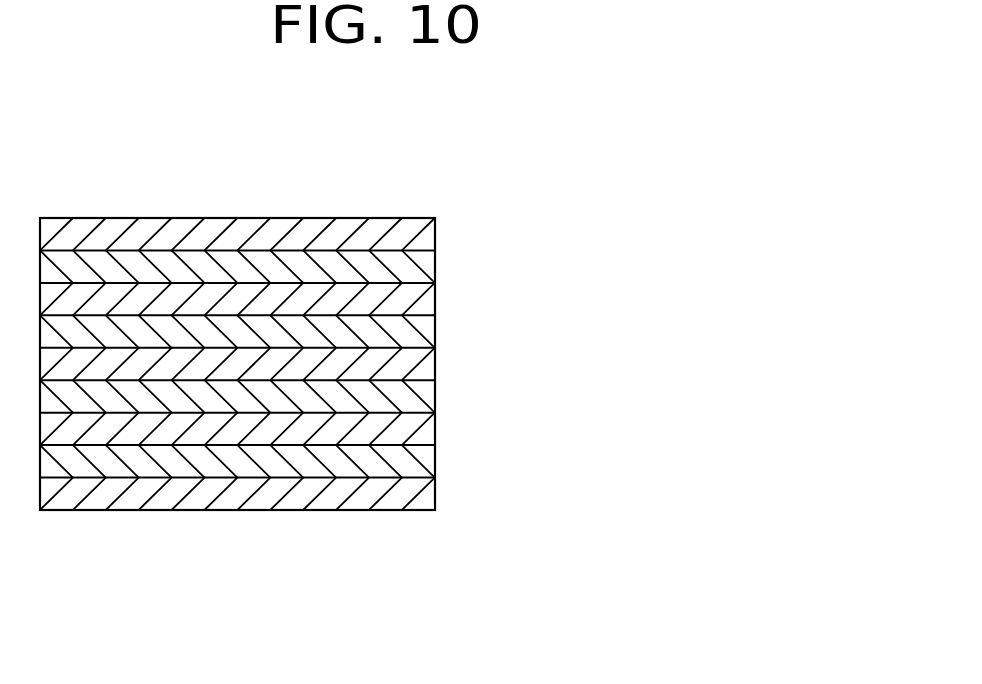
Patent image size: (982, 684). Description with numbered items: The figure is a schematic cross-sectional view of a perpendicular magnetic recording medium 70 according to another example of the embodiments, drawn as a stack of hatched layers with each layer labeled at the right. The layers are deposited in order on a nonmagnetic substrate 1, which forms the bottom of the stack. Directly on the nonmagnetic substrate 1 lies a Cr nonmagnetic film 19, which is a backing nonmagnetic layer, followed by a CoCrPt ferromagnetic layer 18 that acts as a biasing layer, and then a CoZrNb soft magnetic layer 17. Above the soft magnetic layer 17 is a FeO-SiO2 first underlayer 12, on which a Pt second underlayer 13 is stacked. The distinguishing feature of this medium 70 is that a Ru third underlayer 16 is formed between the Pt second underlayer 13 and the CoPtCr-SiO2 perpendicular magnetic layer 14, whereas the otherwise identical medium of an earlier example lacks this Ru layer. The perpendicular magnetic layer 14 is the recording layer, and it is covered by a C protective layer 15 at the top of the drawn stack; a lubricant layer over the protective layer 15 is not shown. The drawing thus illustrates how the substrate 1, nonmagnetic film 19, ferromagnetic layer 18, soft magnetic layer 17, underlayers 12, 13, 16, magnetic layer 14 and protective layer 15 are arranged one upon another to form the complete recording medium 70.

The perpendicular magnetic recording medium 70 is at (256, 190).
The protective layer 15 is at (407, 228).
The perpendicular magnetic layer 14 is at (407, 262).
The third underlayer 16 is at (410, 298).
The second underlayer 13 is at (412, 335).
The first underlayer 12 is at (407, 370).
The soft magnetic layer 17 is at (412, 397).
The ferromagnetic layer 18 is at (412, 427).
The nonmagnetic film 19 is at (410, 463).
The nonmagnetic substrate 1 is at (408, 495).